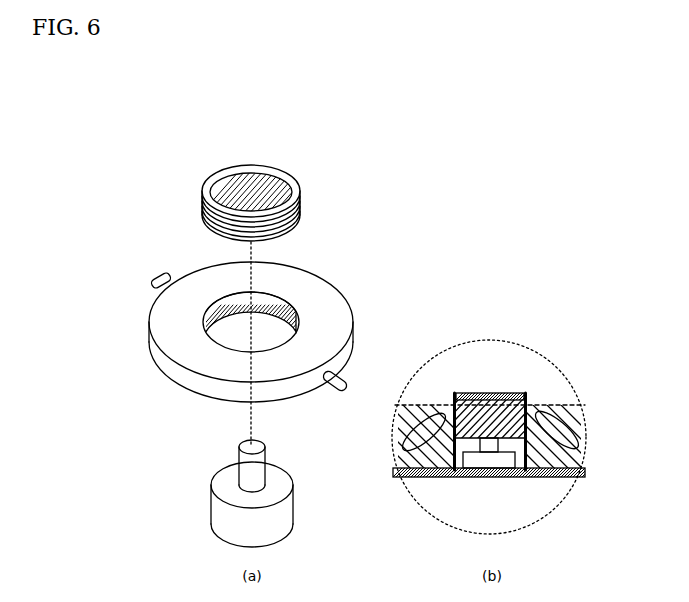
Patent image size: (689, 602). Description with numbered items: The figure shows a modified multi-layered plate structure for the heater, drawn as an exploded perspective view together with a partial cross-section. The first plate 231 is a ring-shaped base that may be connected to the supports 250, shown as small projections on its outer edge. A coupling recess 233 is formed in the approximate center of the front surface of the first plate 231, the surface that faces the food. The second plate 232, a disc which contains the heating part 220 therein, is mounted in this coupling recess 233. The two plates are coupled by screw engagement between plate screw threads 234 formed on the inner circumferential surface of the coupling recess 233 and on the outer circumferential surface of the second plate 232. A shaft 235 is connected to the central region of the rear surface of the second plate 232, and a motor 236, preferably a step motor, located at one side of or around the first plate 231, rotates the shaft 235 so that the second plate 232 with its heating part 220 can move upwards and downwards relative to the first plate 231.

The heating part 220 is at (251, 184).
The first plate 231 is at (344, 348).
The second plate 232 is at (282, 168).
The coupling recess 233 is at (289, 306).
The plate screw threads 234 is at (300, 212).
The shaft 235 is at (265, 456).
The motor 236 is at (291, 504).
The supports 250 is at (170, 278).